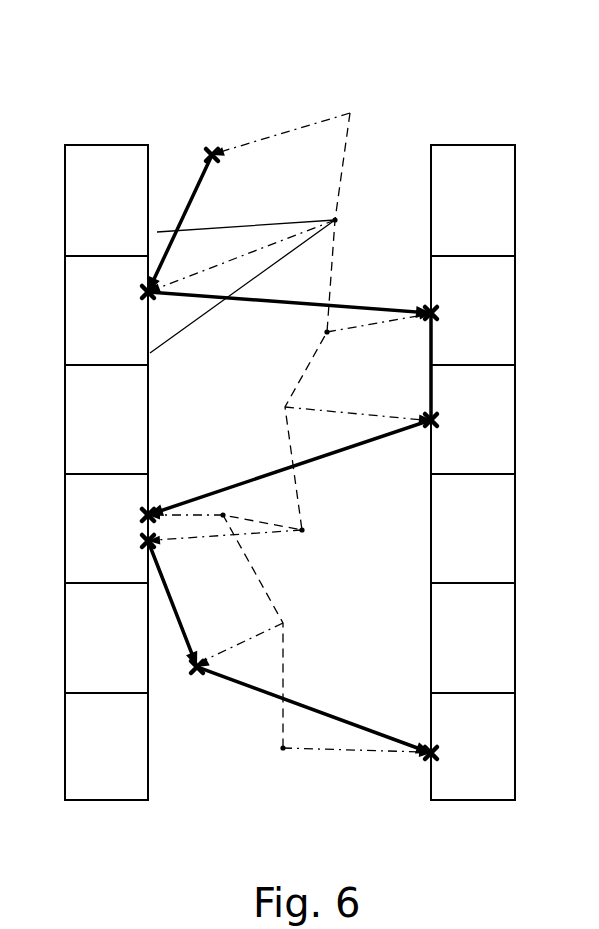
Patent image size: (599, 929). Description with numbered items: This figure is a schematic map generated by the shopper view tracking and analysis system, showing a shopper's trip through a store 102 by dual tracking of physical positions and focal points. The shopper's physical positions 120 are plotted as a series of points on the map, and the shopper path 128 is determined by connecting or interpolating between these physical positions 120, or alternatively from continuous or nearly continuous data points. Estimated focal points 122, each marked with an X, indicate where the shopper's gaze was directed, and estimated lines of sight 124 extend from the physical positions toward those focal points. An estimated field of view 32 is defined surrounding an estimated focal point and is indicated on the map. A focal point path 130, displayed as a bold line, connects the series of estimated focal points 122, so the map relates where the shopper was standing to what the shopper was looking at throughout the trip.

The store 102 is at (476, 42).
The shopper's physical positions 120 is at (353, 108).
The estimated focal points 122 is at (145, 293).
The estimated lines of sight 124 is at (266, 130).
The shopper path 128 is at (338, 171).
The focal point path 130 is at (303, 304).
The estimated field of view 32 is at (292, 262).